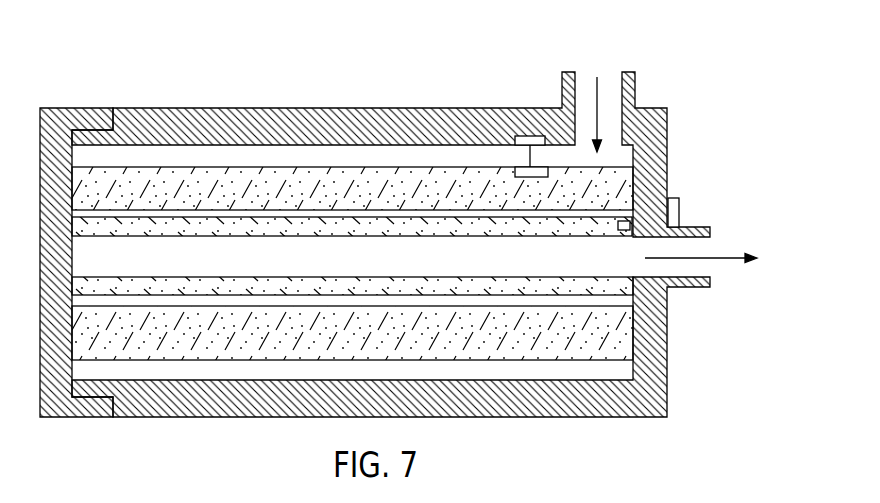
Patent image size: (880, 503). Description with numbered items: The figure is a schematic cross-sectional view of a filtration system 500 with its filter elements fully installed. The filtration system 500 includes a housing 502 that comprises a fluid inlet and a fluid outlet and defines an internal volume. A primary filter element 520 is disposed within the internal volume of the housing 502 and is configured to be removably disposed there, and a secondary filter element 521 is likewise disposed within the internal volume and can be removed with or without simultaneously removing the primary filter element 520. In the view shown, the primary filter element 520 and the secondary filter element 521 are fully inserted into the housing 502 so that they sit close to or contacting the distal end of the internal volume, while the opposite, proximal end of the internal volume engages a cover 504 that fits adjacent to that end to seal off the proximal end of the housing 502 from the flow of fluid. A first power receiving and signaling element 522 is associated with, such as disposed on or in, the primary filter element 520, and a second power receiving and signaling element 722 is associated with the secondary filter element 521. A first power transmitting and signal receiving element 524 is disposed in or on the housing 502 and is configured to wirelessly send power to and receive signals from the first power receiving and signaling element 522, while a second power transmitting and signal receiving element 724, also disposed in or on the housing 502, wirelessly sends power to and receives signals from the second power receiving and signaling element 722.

The filtration system 500 is at (386, 78).
The housing 502 is at (255, 127).
The cover 504 is at (48, 113).
The primary filter element 520 is at (605, 174).
The secondary filter element 521 is at (447, 234).
The first power receiving and signaling element 522 is at (531, 168).
The first power transmitting and signal receiving element 524 is at (521, 136).
The second power receiving and signaling element 722 is at (627, 232).
The second power transmitting and signal receiving element 724 is at (674, 208).